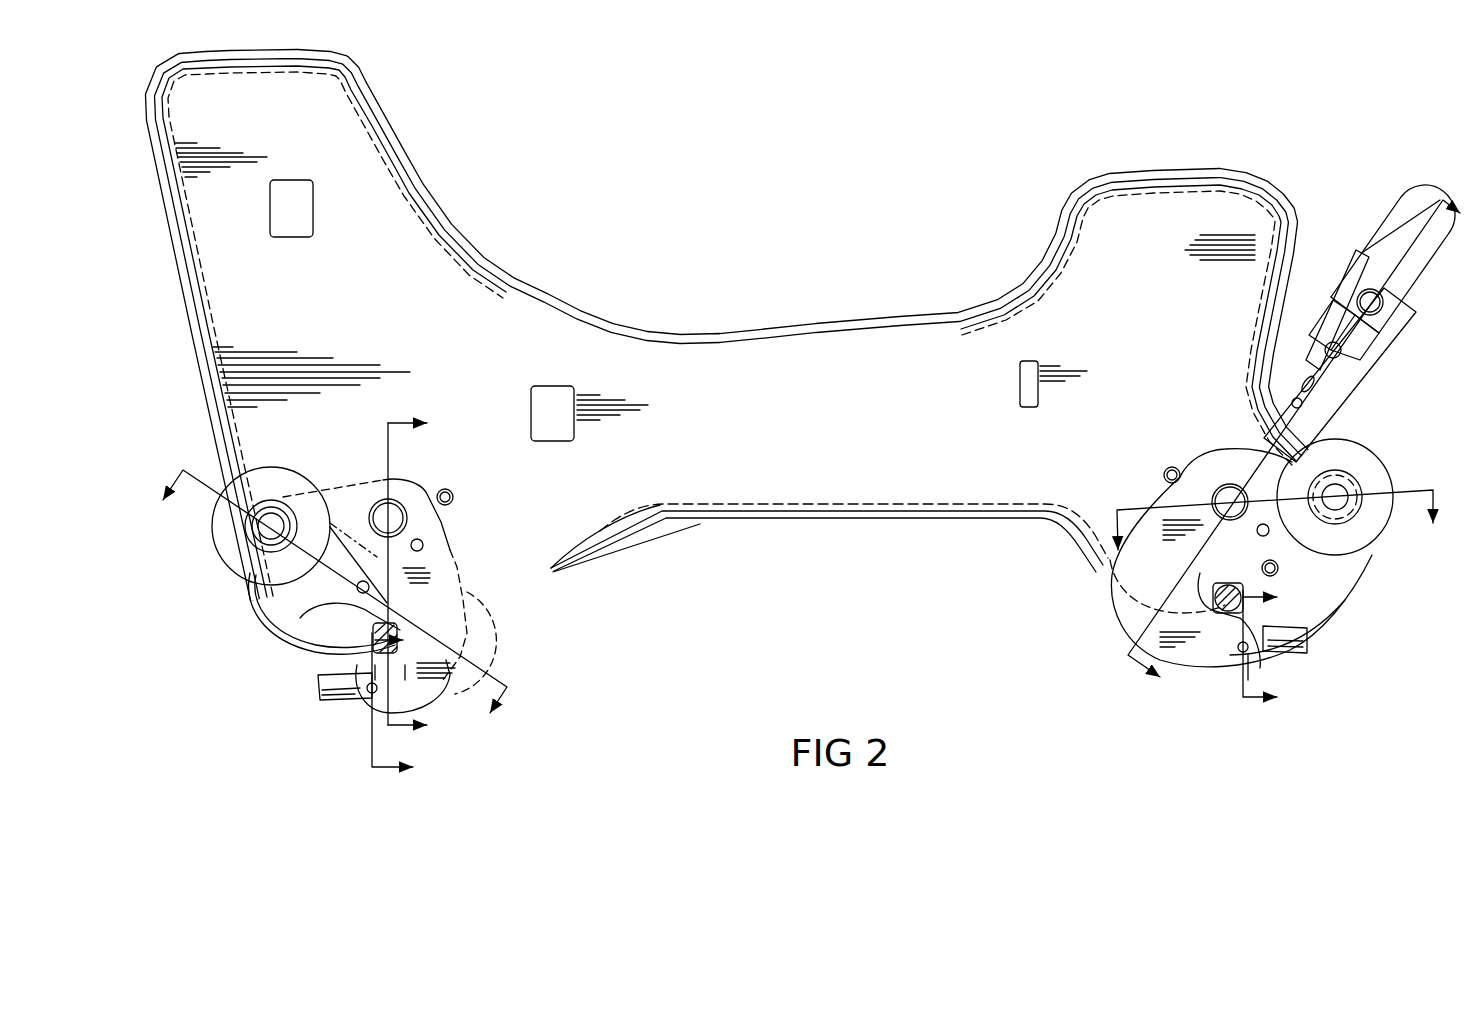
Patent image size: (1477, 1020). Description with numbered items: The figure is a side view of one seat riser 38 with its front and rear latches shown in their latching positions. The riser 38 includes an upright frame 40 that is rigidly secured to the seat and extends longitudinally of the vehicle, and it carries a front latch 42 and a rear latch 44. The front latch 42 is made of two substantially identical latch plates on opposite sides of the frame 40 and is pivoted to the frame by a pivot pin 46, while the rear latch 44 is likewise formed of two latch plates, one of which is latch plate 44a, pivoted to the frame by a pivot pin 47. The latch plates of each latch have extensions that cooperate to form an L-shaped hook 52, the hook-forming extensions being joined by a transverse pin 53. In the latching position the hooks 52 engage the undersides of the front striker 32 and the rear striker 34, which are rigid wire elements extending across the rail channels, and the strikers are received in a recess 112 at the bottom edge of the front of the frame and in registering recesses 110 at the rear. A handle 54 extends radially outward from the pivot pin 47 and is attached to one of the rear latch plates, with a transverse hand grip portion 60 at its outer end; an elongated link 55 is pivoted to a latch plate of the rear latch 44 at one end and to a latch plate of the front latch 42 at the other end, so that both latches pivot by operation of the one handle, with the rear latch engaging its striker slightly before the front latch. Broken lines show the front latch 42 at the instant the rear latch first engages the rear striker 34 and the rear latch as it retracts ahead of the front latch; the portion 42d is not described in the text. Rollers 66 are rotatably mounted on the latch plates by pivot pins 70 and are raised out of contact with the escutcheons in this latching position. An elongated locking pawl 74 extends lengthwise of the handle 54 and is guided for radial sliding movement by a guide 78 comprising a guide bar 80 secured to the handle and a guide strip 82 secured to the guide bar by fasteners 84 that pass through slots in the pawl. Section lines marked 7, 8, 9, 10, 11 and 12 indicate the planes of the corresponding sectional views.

The riser 38 is at (409, 126).
The frame 40 is at (434, 255).
The elongated link 55 is at (642, 545).
The roller 66 is at (245, 572).
The pivot pin 70 is at (258, 523).
The front latch 42 is at (470, 522).
The side plate arm 42d is at (440, 575).
The pivot pin 46 is at (372, 505).
The front striker 32 is at (413, 621).
The recess 112 is at (372, 628).
The L-shaped hook 52 is at (420, 695).
The transverse pin 53 is at (350, 697).
The handle 54 is at (1359, 291).
The hand grip portion 60 is at (1408, 200).
The locking pawl 74 is at (1387, 306).
The guide bar 80 is at (1400, 333).
The guide 78 is at (1380, 353).
The guide strip 82 is at (1325, 352).
The fastener 84 is at (1363, 277).
The rear latch 44 is at (1188, 454).
The latch plate 44a is at (1157, 577).
The pivot pin 47 is at (1229, 484).
The recess 110 is at (1205, 590).
The rear striker 34 is at (1230, 620).
The section line 7- 7 is at (350, 570).
The section line 8- 8 is at (376, 700).
The section line 9- 9 is at (420, 574).
The section line 10- 10 is at (1283, 636).
The section line 11- 11 is at (1271, 498).
The section line 12- 12 is at (1284, 433).